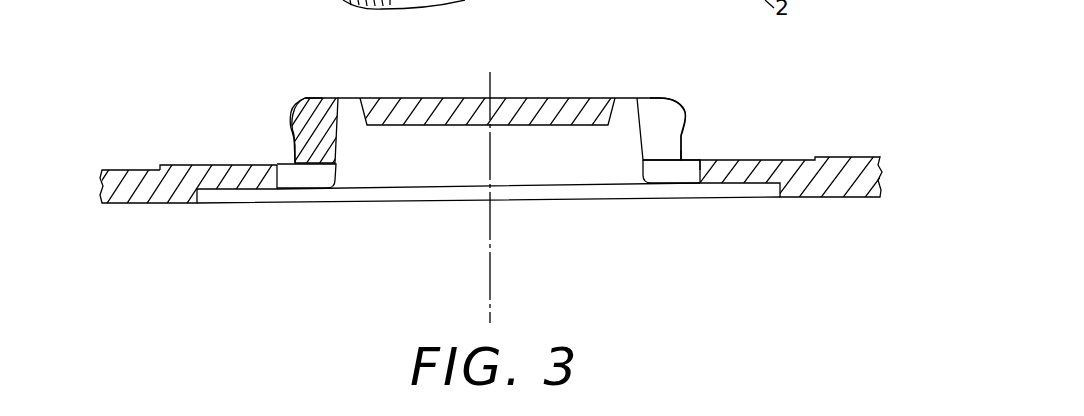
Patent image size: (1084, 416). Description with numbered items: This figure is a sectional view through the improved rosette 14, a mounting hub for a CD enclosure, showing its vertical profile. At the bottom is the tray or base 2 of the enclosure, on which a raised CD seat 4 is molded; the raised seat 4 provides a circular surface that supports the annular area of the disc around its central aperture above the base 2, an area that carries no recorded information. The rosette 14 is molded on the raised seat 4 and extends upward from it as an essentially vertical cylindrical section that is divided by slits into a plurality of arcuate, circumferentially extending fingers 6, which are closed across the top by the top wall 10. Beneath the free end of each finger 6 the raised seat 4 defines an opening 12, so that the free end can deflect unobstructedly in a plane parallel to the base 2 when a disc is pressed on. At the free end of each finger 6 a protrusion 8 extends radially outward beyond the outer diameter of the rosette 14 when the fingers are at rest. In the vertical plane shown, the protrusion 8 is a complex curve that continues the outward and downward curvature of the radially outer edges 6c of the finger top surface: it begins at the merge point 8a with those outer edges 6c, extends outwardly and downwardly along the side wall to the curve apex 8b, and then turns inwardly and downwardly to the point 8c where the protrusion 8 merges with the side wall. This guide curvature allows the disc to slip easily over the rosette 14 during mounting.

The base 2 is at (121, 168).
The raised CD seat 4 is at (172, 164).
The finger 6 is at (329, 96).
The radially outer edge of finger top surface 6c is at (298, 99).
The protrusion 8 is at (289, 117).
The merge point 8a is at (288, 110).
The curve apex 8b is at (290, 119).
The merge point with side wall 8c is at (294, 137).
The top wall 10 is at (520, 96).
The opening 12 is at (340, 184).
The rosette 14 is at (716, 125).